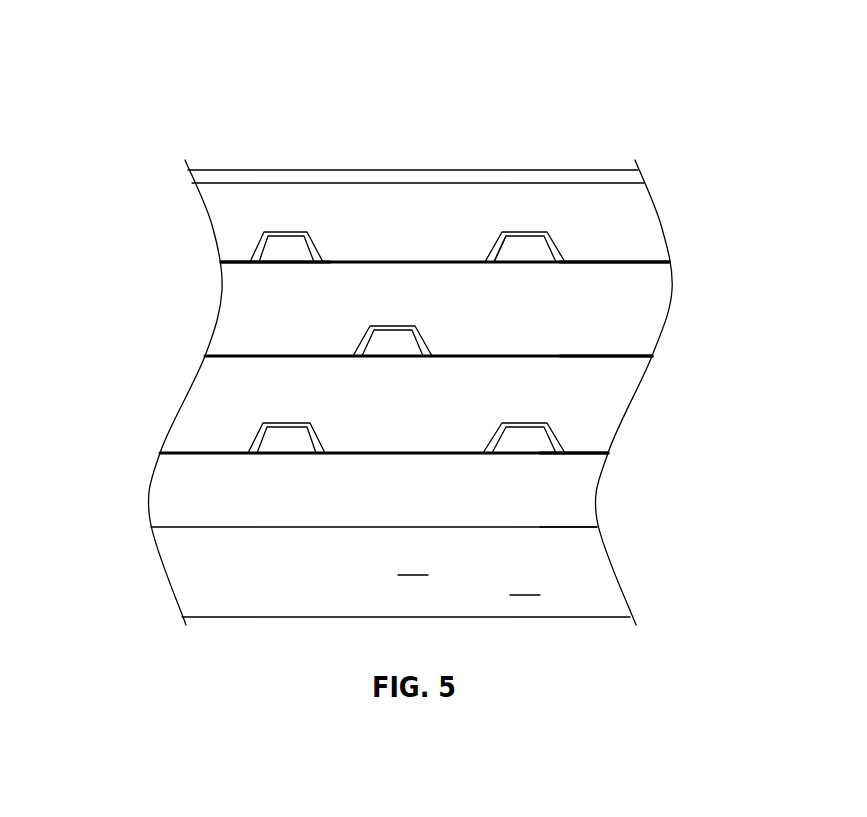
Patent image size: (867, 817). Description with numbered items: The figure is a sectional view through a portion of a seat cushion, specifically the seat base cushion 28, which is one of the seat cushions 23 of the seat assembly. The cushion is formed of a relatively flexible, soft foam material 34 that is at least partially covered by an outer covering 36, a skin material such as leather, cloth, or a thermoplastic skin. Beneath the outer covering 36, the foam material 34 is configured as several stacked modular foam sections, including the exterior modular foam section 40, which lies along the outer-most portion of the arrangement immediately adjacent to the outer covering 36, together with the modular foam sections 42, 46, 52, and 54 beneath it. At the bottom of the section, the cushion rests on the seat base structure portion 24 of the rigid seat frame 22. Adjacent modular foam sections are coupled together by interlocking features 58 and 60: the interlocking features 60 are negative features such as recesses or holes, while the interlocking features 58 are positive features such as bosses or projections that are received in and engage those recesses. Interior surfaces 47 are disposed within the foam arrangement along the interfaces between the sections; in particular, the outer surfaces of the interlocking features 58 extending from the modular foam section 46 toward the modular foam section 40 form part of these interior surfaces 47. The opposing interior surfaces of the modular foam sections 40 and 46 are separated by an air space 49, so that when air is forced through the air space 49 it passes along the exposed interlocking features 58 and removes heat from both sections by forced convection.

The seat cushions 23 is at (562, 58).
The seat base cushion 28 is at (645, 112).
The outer covering 36 is at (345, 181).
The modular foam section 40 is at (435, 222).
The foam material 34 is at (228, 217).
The modular foam section 42 is at (258, 250).
The interlocking features 60 is at (272, 233).
The interlocking features 58 is at (290, 246).
The interior surfaces 47 is at (497, 250).
The air space 49 is at (630, 262).
The modular foam section 46 is at (630, 323).
The modular foam section 52 is at (590, 410).
The modular foam section 54 is at (555, 490).
The seat frame 22 is at (413, 559).
The seat base structure portion 24 is at (525, 580).